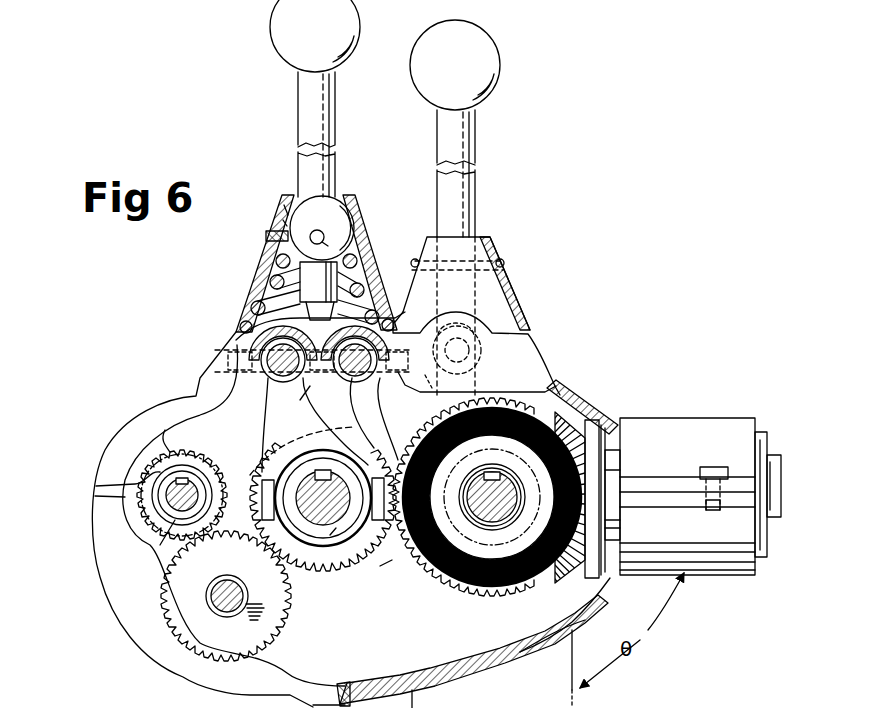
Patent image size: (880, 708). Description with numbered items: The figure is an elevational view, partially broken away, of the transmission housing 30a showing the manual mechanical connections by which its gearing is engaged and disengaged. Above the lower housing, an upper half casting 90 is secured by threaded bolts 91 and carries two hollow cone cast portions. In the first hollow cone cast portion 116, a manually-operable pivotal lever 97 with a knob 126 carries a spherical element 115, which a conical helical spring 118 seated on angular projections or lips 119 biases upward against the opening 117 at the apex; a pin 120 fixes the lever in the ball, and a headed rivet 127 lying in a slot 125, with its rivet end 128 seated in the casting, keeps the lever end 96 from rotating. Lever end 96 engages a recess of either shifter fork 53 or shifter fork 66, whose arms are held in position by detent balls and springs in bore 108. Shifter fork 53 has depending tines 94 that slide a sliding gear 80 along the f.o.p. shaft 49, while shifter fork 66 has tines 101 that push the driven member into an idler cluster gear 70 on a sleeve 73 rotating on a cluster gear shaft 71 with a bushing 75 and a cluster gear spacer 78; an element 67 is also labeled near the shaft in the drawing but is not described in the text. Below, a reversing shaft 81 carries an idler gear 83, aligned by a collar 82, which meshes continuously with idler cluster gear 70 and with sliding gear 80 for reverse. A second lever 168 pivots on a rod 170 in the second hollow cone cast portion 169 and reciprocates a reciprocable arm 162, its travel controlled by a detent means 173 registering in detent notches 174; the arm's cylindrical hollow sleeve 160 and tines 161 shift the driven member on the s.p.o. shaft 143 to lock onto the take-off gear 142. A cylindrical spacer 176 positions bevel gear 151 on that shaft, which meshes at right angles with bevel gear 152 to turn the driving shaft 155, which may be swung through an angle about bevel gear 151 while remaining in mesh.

The transmission housing 30a is at (112, 612).
The f.o.p. shaft 49 is at (323, 499).
The shifter fork 53 is at (358, 402).
The shifter fork 66 is at (280, 428).
The keyway 67 is at (330, 535).
The idler cluster gear 70 is at (155, 435).
The cluster gear shaft 71 is at (195, 470).
The sleeve 73 is at (170, 480).
The bushing 75 is at (110, 500).
The cluster gear spacer 78 is at (175, 520).
The sliding gear 80 is at (375, 571).
The reversing shaft 81 is at (238, 590).
The collar 82 is at (230, 578).
The idler gear 83 is at (290, 600).
The upper half casting 90 is at (215, 380).
The threaded bolts 91 is at (715, 468).
The tines 94 is at (268, 470).
The lever end 96 is at (295, 402).
The pivotal lever 97 is at (298, 120).
The tines 101 is at (372, 462).
The bore 108 is at (238, 344).
The spherical element 115 is at (338, 222).
The hollow cone cast portion 116 is at (275, 262).
The opening 117 is at (345, 203).
The conical helical spring 118 is at (265, 290).
The angular projections or lips 119 is at (248, 320).
The pin 120 is at (314, 248).
The slot 125 is at (280, 210).
The knob 126 is at (268, 28).
The headed rivet 127 is at (282, 222).
The rivet end 128 is at (266, 236).
The take-off gear 142 is at (455, 590).
The s.p.o. shaft 143 is at (490, 582).
The bevel gear 151 is at (530, 588).
The bevel gear 152 is at (612, 410).
The driving shaft 155 is at (778, 432).
The cylindrical hollow sleeve 160 is at (486, 354).
The tines 161 is at (622, 462).
The reciprocable arm 162 is at (480, 351).
The second lever 168 is at (477, 128).
The second hollow cone cast portion 169 is at (520, 304).
The rod 170 is at (505, 265).
The detent means 173 is at (462, 324).
The detent notches 174 is at (422, 377).
The cylindrical spacer 176 is at (476, 540).